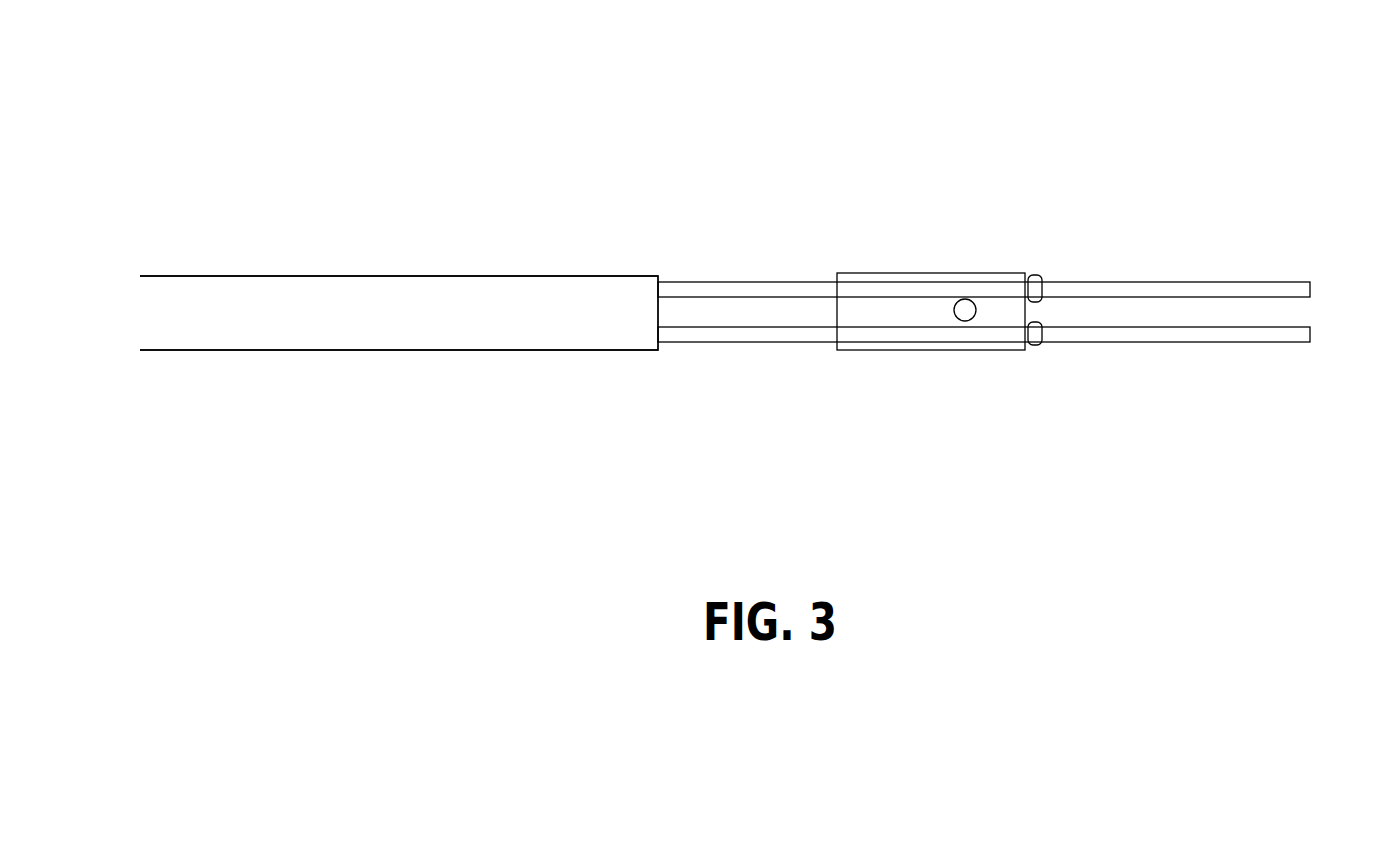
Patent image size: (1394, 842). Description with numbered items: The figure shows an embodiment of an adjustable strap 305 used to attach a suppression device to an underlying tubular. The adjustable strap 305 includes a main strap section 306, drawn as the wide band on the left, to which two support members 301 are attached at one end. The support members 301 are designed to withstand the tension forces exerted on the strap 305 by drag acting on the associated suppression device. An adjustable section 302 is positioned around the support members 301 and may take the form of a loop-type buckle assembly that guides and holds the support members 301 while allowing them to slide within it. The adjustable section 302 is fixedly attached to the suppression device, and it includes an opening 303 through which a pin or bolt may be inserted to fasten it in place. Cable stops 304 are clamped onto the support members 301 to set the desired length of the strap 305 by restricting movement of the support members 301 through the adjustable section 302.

The support members 301 is at (1017, 316).
The adjustable section 302 is at (922, 273).
The opening 303 is at (956, 376).
The cable stops 304 is at (1107, 291).
The adjustable strap 305 is at (399, 259).
The main strap section 306 is at (399, 192).